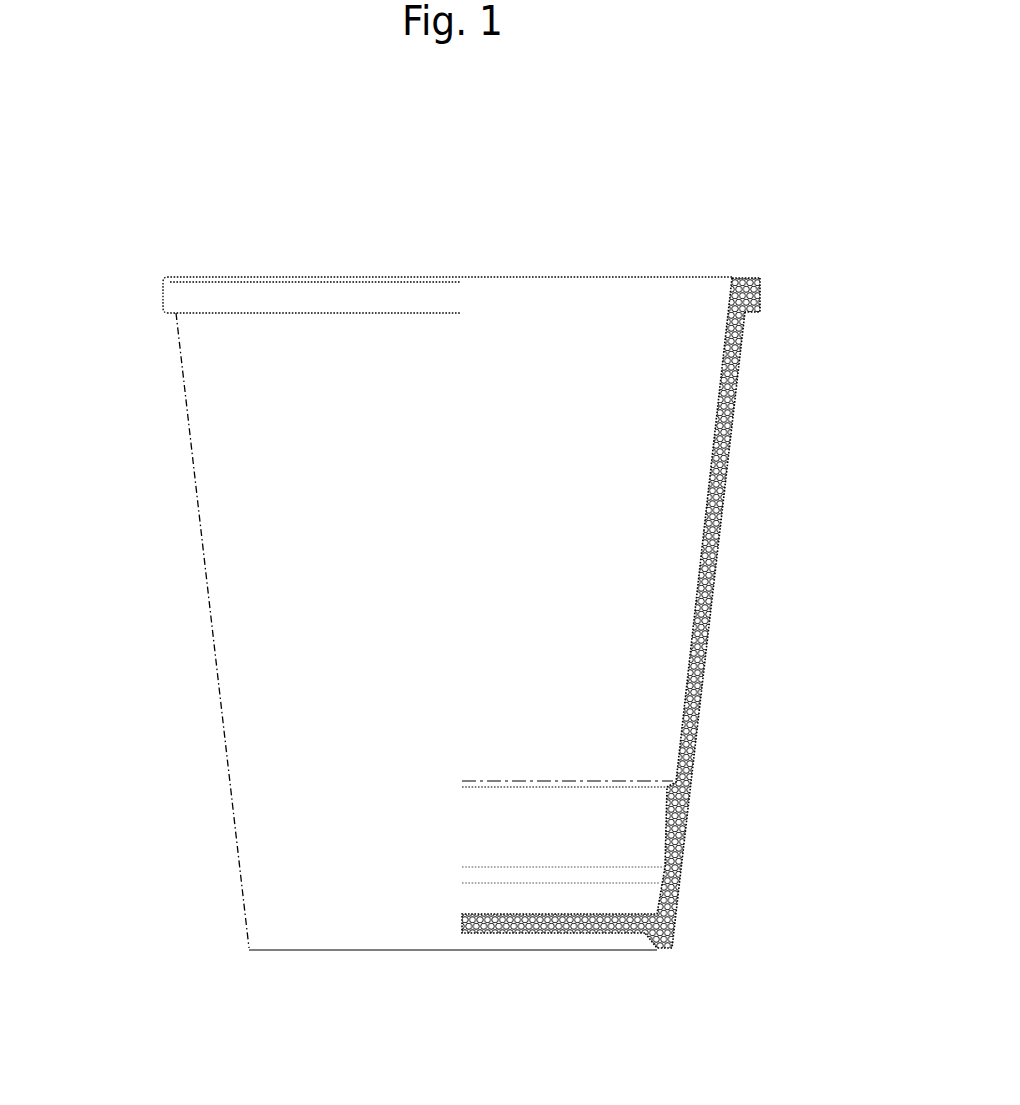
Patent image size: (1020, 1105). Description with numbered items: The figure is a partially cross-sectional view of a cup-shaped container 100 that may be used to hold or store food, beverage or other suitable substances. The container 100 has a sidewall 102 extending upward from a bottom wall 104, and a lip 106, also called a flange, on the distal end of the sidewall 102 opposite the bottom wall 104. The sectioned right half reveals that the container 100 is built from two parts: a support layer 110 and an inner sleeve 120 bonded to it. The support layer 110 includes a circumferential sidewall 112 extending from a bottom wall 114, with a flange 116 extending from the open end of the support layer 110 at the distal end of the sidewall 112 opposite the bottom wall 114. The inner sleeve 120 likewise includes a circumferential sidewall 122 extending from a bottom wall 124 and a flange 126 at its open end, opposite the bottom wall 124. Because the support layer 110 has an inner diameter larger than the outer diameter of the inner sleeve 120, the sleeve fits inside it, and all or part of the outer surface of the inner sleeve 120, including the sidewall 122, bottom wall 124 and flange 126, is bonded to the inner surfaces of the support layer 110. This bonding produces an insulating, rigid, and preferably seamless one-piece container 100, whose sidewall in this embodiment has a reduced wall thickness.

The container 100 is at (572, 180).
The sidewall 102 is at (193, 468).
The bottom wall 104 is at (290, 951).
The lip 106 is at (182, 300).
The support layer 110 is at (722, 543).
The circumferential sidewall 112 is at (698, 747).
The bottom wall 114 is at (665, 938).
The flange 116 is at (753, 298).
The inner sleeve 120 is at (718, 382).
The circumferential sidewall 122 is at (692, 638).
The bottom wall 124 is at (568, 913).
The flange 126 is at (738, 275).